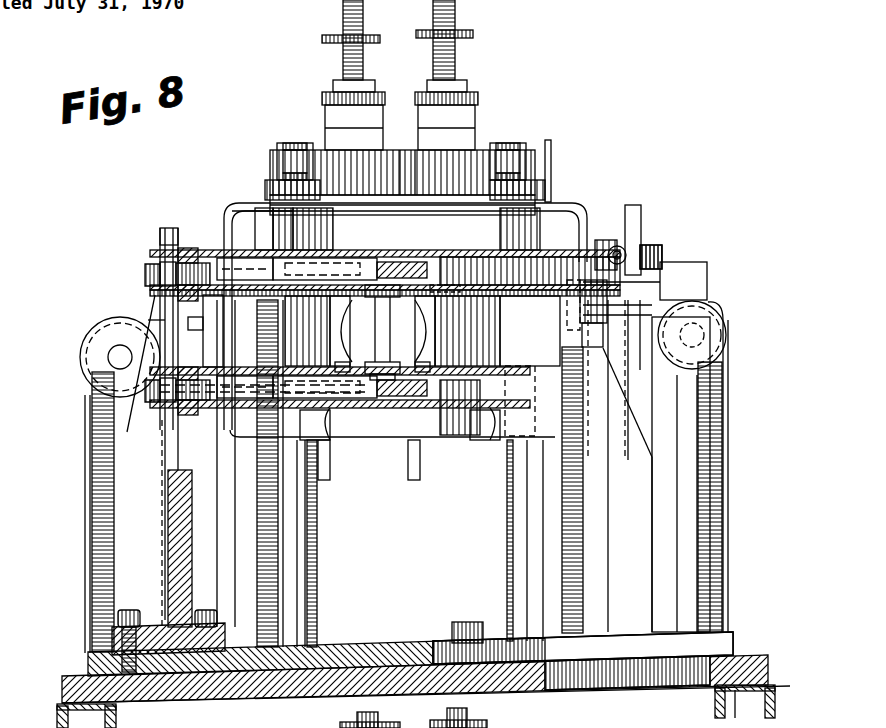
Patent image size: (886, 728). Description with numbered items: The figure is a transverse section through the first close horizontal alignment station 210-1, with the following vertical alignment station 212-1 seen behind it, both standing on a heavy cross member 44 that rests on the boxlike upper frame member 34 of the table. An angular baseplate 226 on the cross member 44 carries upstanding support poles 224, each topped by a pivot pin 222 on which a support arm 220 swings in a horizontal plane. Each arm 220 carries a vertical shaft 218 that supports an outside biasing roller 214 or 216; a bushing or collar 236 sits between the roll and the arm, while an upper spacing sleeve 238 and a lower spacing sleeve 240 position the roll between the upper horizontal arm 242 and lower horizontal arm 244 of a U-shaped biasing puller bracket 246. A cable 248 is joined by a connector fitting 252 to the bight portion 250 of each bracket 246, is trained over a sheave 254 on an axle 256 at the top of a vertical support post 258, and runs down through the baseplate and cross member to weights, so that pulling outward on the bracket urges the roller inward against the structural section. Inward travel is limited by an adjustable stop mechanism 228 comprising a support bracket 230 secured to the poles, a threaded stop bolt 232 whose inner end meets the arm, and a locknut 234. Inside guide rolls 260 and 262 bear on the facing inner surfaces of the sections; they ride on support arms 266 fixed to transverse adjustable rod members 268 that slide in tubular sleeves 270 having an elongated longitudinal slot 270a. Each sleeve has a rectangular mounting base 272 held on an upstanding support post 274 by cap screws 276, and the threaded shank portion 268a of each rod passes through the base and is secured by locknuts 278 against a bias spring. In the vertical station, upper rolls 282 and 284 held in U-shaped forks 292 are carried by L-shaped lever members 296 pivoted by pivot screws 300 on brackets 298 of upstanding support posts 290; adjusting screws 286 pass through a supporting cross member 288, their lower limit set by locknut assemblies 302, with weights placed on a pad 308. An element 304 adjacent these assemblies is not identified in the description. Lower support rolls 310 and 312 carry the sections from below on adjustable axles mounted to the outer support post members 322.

The upper frame member 34 is at (775, 702).
The cross member 44 is at (760, 668).
The horizontal alignment station 210-1 is at (818, 182).
The vertical alignment station 212-1 is at (640, 8).
The outside biasing roller 214 is at (320, 328).
The outside biasing roller 216 is at (457, 331).
The vertical shaft 218 is at (270, 198).
The support arm 220 is at (505, 280).
The pivot pin 222 is at (560, 242).
The support pole 224 is at (312, 592).
The baseplate 226 is at (740, 644).
The adjustable stop mechanism 228 is at (662, 250).
The support bracket 230 is at (670, 300).
The stop bolt 232 is at (662, 258).
The locknut 234 is at (625, 248).
The bushing or collar 236 is at (455, 296).
The upper spacing sleeve 238 is at (340, 228).
The lower spacing sleeve 240 is at (328, 438).
The upper horizontal arm 242 is at (280, 230).
The lower horizontal arm 244 is at (318, 470).
The U-shaped biasing puller bracket 246 is at (215, 204).
The cable 248 is at (86, 518).
The bight portion 250 is at (230, 340).
The connector fitting 252 is at (188, 325).
The sheave 254 is at (98, 358).
The axle 256 is at (108, 356).
The vertical support post 258 is at (105, 566).
The inside guide roll 260 is at (375, 362).
The inside guide roll 262 is at (398, 370).
The support arm 266 is at (415, 262).
The adjustable rod member 268 is at (325, 290).
The threaded shank portion 268a is at (255, 295).
The tubular sleeve 270 is at (210, 250).
The elongated longitudinal slot 270a is at (442, 435).
The rectangular mounting base 272 is at (165, 235).
The upstanding support post 274 is at (170, 498).
The cap screw 276 is at (145, 273).
The locknut 278 is at (165, 262).
The upper roll 282 is at (325, 210).
The upper roll 284 is at (440, 205).
The adjusting screw 286 is at (343, 40).
The supporting cross member 288 is at (556, 156).
The upstanding support post 290 is at (317, 628).
The U-shaped fork 292 is at (380, 210).
The L-shaped lever member 296 is at (285, 143).
The bracket 298 is at (290, 160).
The pivot screw 300 is at (330, 118).
The locknut assembly 302 is at (335, 80).
The flange nut 304 is at (325, 97).
The pad 308 is at (343, 28).
The lower support roll 310 is at (335, 362).
The lower support roll 312 is at (430, 362).
The outer support post member 322 is at (700, 278).